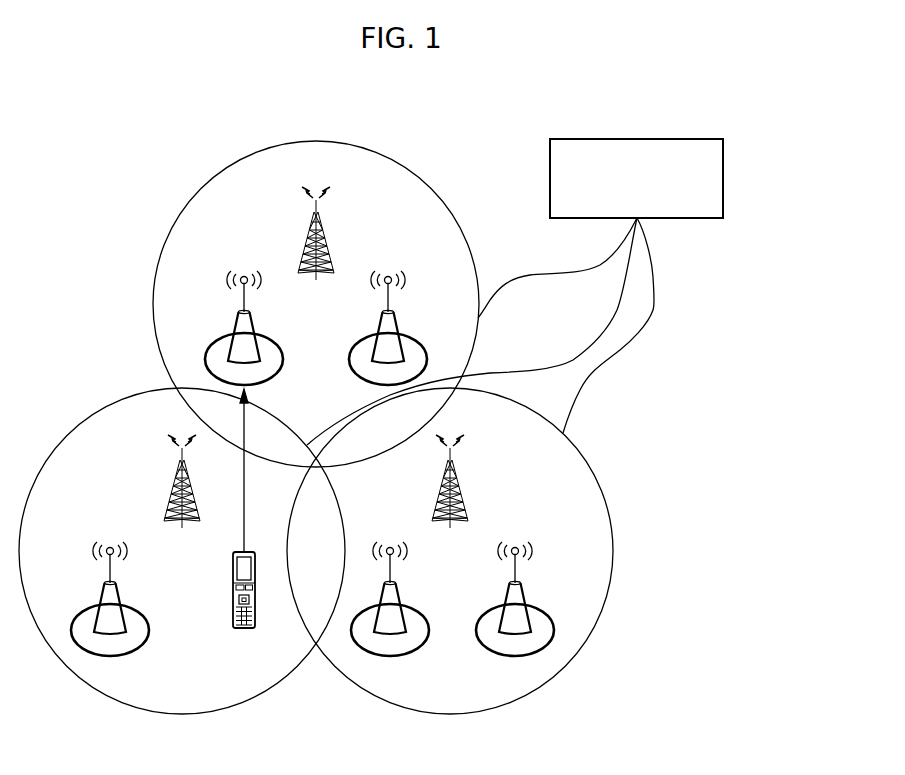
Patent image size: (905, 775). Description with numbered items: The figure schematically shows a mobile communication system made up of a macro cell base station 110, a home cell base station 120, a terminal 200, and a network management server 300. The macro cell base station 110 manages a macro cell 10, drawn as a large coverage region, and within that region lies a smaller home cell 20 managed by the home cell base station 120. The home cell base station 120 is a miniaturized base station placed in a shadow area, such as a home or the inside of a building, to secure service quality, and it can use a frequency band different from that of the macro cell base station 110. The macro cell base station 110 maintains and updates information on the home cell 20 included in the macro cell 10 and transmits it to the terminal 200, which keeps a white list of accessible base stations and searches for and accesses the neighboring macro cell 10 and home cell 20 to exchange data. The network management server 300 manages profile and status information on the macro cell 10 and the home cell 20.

The macro cell 10 is at (375, 153).
The macro cell base station 110 is at (313, 218).
The home cell base station 120 is at (236, 327).
The home cell 20 is at (205, 360).
The terminal 200 is at (248, 628).
The network management server 300 is at (724, 178).